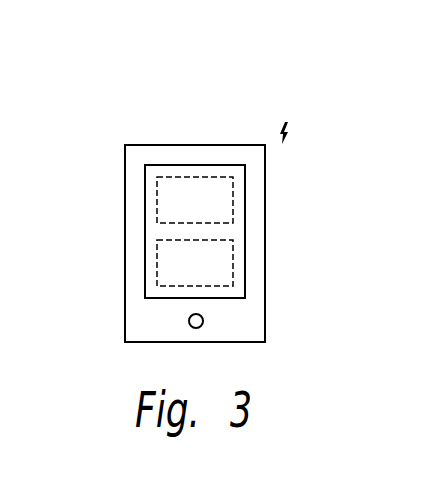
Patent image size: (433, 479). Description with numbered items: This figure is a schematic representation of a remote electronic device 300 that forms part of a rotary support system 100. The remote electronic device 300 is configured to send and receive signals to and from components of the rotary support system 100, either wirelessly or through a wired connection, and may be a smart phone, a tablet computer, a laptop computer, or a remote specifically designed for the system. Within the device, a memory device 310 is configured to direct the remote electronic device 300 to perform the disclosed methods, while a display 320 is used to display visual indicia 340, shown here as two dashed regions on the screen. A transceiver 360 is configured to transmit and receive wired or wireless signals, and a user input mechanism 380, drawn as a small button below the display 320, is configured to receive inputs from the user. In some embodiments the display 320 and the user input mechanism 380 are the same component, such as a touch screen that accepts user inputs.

The rotary support system 100 is at (151, 57).
The remote electronic device 300 is at (216, 141).
The memory device 310 is at (134, 190).
The display 320 is at (145, 250).
The visual indicia 340 is at (233, 193).
The transceiver 360 is at (134, 290).
The user input mechanism 380 is at (193, 329).